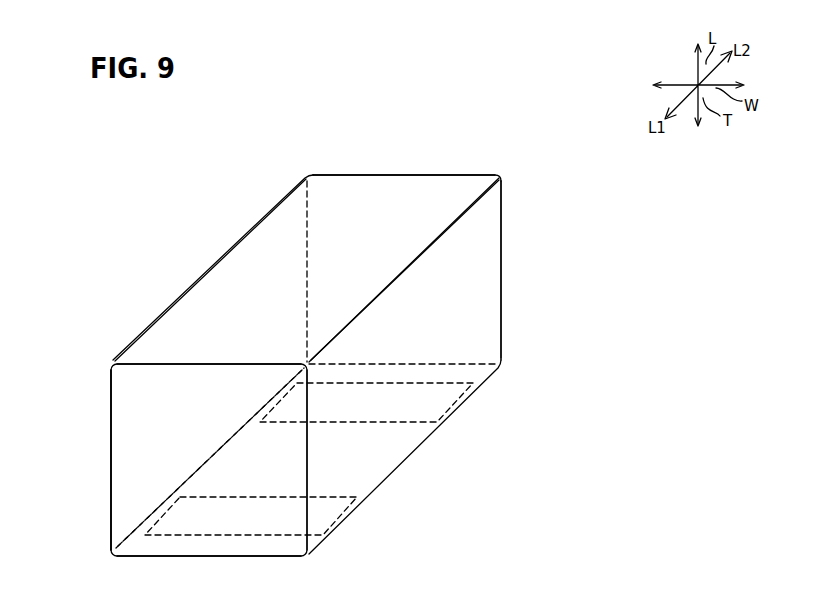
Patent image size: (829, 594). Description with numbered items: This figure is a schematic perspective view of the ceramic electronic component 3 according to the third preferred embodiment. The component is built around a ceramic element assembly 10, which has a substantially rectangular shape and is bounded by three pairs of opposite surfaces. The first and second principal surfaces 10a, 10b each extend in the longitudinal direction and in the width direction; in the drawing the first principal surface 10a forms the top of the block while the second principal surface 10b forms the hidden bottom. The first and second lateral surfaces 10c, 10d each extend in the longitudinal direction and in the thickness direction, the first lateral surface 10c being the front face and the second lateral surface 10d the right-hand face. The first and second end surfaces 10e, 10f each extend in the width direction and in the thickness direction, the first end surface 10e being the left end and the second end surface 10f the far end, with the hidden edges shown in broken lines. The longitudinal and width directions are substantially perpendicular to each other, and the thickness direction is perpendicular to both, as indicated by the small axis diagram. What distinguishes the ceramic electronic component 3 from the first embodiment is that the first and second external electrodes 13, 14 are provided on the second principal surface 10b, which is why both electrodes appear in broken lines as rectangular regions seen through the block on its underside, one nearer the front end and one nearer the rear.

The ceramic electronic component 3 is at (546, 155).
The ceramic element assembly 10 is at (510, 262).
The first principal surface 10a is at (237, 278).
The second principal surface 10b is at (363, 467).
The first lateral surface 10c is at (130, 421).
The second lateral surface 10d is at (463, 320).
The first end surface 10e is at (130, 491).
The second end surface 10f is at (482, 242).
The first external electrode 13 is at (343, 523).
The second external electrode 14 is at (447, 399).